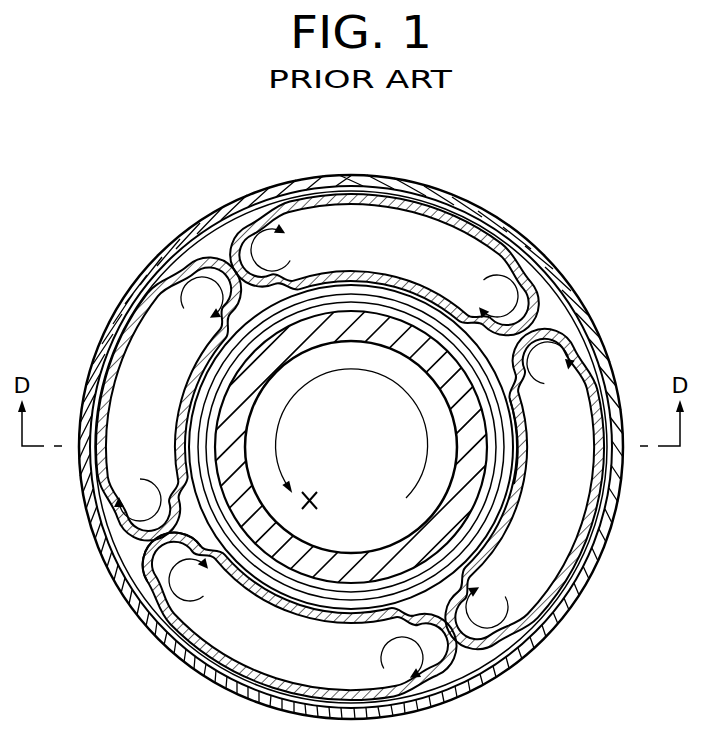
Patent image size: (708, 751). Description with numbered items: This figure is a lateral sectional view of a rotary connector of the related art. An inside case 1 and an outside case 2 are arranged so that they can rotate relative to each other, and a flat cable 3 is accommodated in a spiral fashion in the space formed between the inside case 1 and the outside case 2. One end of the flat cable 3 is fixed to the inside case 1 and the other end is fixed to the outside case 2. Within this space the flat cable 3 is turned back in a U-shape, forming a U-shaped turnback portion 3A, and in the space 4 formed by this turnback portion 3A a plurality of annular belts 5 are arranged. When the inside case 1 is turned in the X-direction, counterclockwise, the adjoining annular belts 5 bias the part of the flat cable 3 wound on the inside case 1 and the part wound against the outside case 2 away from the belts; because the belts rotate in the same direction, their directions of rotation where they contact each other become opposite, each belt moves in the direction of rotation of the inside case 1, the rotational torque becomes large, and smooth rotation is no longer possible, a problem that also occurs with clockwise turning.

The inside case 1 is at (433, 348).
The outside case 2 is at (594, 331).
The flat cable 3 is at (528, 468).
The turnback portion 3A is at (150, 565).
The space 4 is at (473, 652).
The annular belts 5 is at (455, 213).